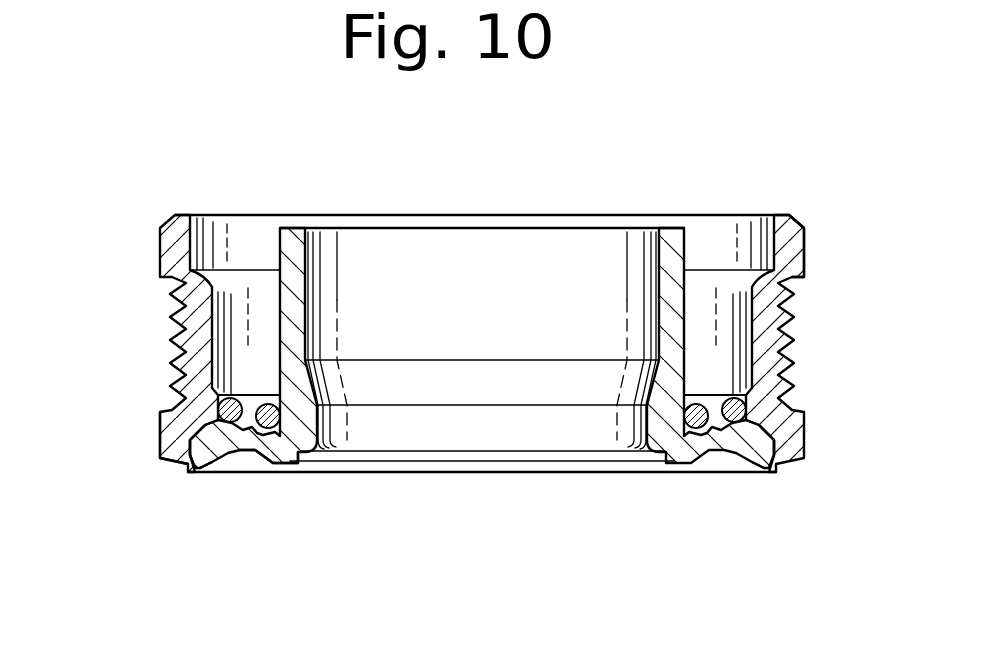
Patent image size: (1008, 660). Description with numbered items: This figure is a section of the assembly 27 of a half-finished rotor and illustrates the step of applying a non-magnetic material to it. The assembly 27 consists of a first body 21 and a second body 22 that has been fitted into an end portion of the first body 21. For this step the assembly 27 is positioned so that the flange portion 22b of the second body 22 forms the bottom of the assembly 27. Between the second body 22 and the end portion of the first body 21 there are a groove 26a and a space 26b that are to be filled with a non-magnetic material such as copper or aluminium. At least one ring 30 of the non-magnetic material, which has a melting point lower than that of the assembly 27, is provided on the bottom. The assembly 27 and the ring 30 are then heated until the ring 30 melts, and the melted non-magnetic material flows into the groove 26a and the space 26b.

The first body 21 is at (147, 218).
The second body 22 is at (266, 222).
The flange portion 22b is at (207, 465).
The groove 26a is at (297, 452).
The space 26b is at (167, 430).
The assembly 27 is at (797, 212).
The ring 30 is at (266, 432).